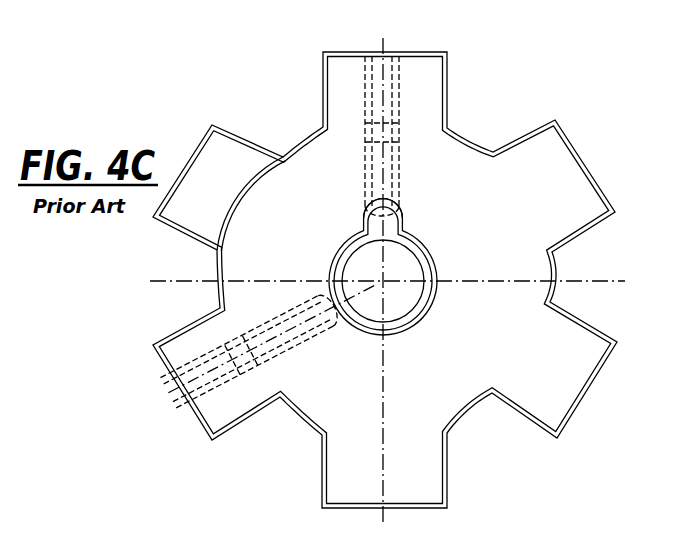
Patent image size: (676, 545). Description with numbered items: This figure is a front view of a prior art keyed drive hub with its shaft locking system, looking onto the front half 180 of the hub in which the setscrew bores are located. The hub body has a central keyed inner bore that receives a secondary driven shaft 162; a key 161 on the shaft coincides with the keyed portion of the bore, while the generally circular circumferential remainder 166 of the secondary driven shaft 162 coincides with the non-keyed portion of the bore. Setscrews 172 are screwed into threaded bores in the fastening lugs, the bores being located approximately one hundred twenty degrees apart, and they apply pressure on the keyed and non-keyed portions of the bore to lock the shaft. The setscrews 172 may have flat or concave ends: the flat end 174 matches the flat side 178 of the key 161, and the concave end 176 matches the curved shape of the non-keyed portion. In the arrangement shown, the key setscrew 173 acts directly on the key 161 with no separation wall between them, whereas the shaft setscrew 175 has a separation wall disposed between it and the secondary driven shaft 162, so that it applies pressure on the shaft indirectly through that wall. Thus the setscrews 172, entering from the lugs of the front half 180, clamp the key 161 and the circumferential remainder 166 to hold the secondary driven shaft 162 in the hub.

The key 161 is at (403, 222).
The secondary driven shaft 162 is at (433, 262).
The circumferential remainder 166 is at (413, 313).
The setscrews 172 is at (402, 173).
The key setscrew 173 is at (360, 137).
The flat end 174 is at (360, 223).
The shaft setscrew 175 is at (291, 345).
The concave end 176 is at (351, 315).
The flat side 178 is at (398, 210).
The front half 180 is at (512, 417).